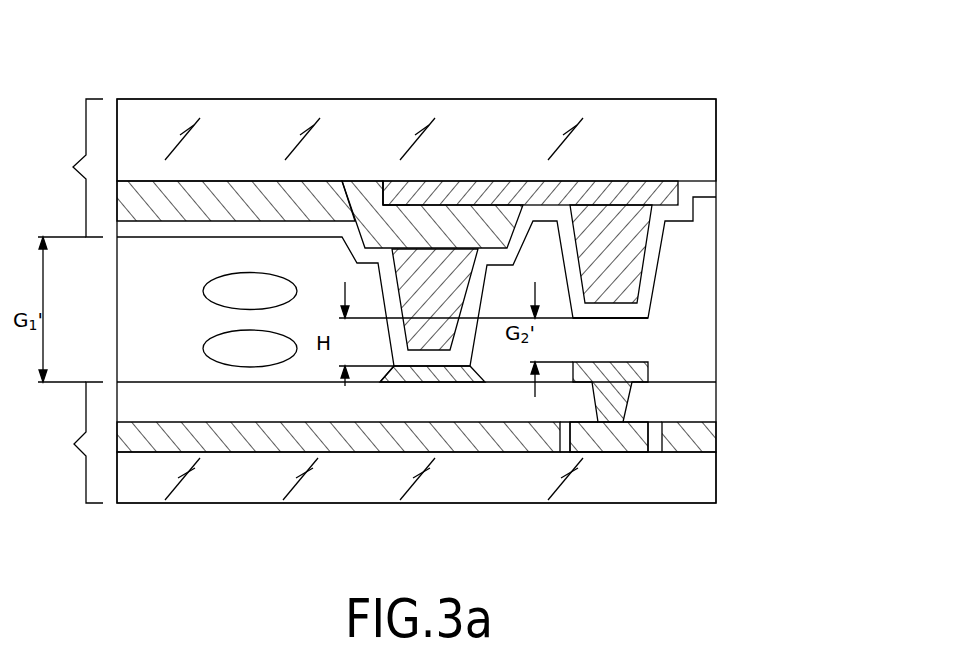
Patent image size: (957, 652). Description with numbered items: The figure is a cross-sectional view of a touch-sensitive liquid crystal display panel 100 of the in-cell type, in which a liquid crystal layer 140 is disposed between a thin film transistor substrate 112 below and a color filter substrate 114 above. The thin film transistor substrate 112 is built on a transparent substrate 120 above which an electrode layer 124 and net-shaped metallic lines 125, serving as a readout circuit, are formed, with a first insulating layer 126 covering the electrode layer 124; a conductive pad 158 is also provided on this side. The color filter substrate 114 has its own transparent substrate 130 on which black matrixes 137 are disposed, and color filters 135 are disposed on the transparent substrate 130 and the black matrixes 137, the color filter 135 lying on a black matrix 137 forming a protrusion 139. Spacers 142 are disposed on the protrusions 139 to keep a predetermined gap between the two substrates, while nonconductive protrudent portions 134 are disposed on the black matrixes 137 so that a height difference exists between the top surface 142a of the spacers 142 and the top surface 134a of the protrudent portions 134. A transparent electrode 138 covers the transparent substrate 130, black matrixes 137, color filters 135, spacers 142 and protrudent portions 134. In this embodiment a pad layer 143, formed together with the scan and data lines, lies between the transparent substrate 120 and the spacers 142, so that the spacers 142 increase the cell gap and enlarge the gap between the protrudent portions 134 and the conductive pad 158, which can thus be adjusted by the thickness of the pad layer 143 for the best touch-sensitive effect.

The touch-sensitive liquid crystal display panel 100 is at (112, 82).
The color filter substrate 114 is at (65, 168).
The thin film transistor substrate 112 is at (67, 442).
The color filter 135 is at (228, 221).
The black matrix 137 is at (508, 190).
The protrusion 139 is at (398, 204).
The transparent substrate 130 is at (695, 162).
The transparent electrode 138 is at (652, 255).
The protrudent portion 134 is at (613, 270).
The top surface of protrudent portion 134a is at (612, 318).
The liquid crystal layer 140 is at (138, 317).
The spacer 142 is at (435, 335).
The pad layer 143 is at (417, 372).
The top surface of spacer 142a is at (400, 370).
The first insulating layer 126 is at (160, 395).
The electrode layer 124 is at (255, 432).
The net-shaped metallic lines 125 is at (617, 442).
The conductive pad 158 is at (590, 373).
The transparent substrate 120 is at (702, 482).